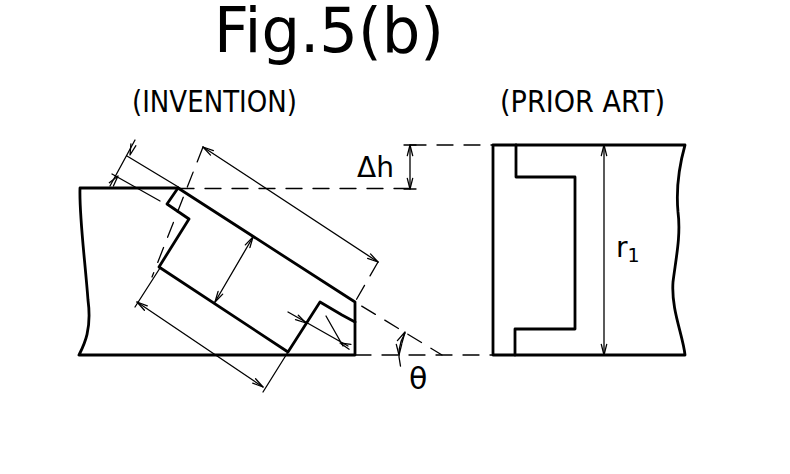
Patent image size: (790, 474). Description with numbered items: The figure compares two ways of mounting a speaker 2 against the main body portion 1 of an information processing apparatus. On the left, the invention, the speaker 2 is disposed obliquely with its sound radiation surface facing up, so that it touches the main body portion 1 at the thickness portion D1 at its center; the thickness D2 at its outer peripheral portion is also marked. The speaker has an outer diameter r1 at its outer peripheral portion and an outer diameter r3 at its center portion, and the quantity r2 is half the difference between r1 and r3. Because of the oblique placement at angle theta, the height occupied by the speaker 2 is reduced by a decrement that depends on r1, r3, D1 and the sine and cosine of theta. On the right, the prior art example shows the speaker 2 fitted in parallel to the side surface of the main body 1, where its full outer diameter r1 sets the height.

The main body portion 1 is at (647, 358).
The speaker 2 is at (547, 300).
The outer diameter r1 is at (290, 204).
The half difference of outer diameters r2 is at (306, 322).
The outer diameter at center portion r3 is at (211, 330).
The thickness at center D1 is at (242, 269).
The thickness at outer peripheral portion D2 is at (134, 168).